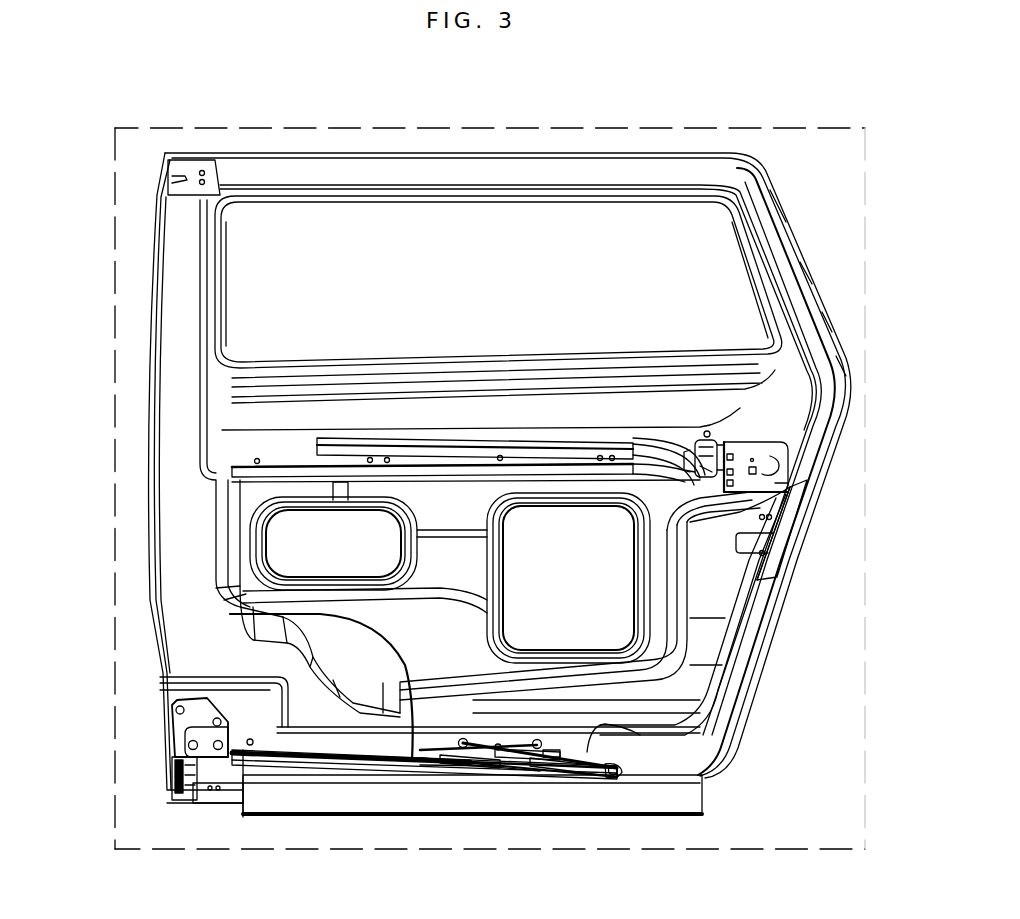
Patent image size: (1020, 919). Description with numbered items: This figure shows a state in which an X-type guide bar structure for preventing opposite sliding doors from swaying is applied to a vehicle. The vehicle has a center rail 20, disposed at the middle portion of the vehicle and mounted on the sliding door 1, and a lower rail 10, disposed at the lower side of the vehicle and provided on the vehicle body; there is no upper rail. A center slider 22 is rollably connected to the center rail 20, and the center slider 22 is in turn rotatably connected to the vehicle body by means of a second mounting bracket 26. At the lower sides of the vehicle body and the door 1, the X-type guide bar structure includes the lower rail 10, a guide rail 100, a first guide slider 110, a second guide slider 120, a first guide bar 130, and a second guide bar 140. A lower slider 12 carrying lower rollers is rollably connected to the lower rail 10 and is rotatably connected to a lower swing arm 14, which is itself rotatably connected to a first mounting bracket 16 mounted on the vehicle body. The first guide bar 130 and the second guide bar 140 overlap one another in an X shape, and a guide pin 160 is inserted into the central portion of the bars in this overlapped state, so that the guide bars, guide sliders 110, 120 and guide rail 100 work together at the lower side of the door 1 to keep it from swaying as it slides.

The sliding door 1 is at (172, 411).
The lower rail 10 is at (633, 803).
The lower slider 12 is at (300, 768).
The lower swing arm 14 is at (178, 755).
The first mounting bracket 16 is at (185, 722).
The center rail 20 is at (532, 450).
The center slider 22 is at (708, 432).
The second mounting bracket 26 is at (767, 462).
The guide rail 100 is at (288, 752).
The first guide slider 110 is at (470, 758).
The second guide slider 120 is at (537, 758).
The first guide bar 130 is at (230, 614).
The second guide bar 140 is at (613, 725).
The guide pin 160 is at (495, 757).